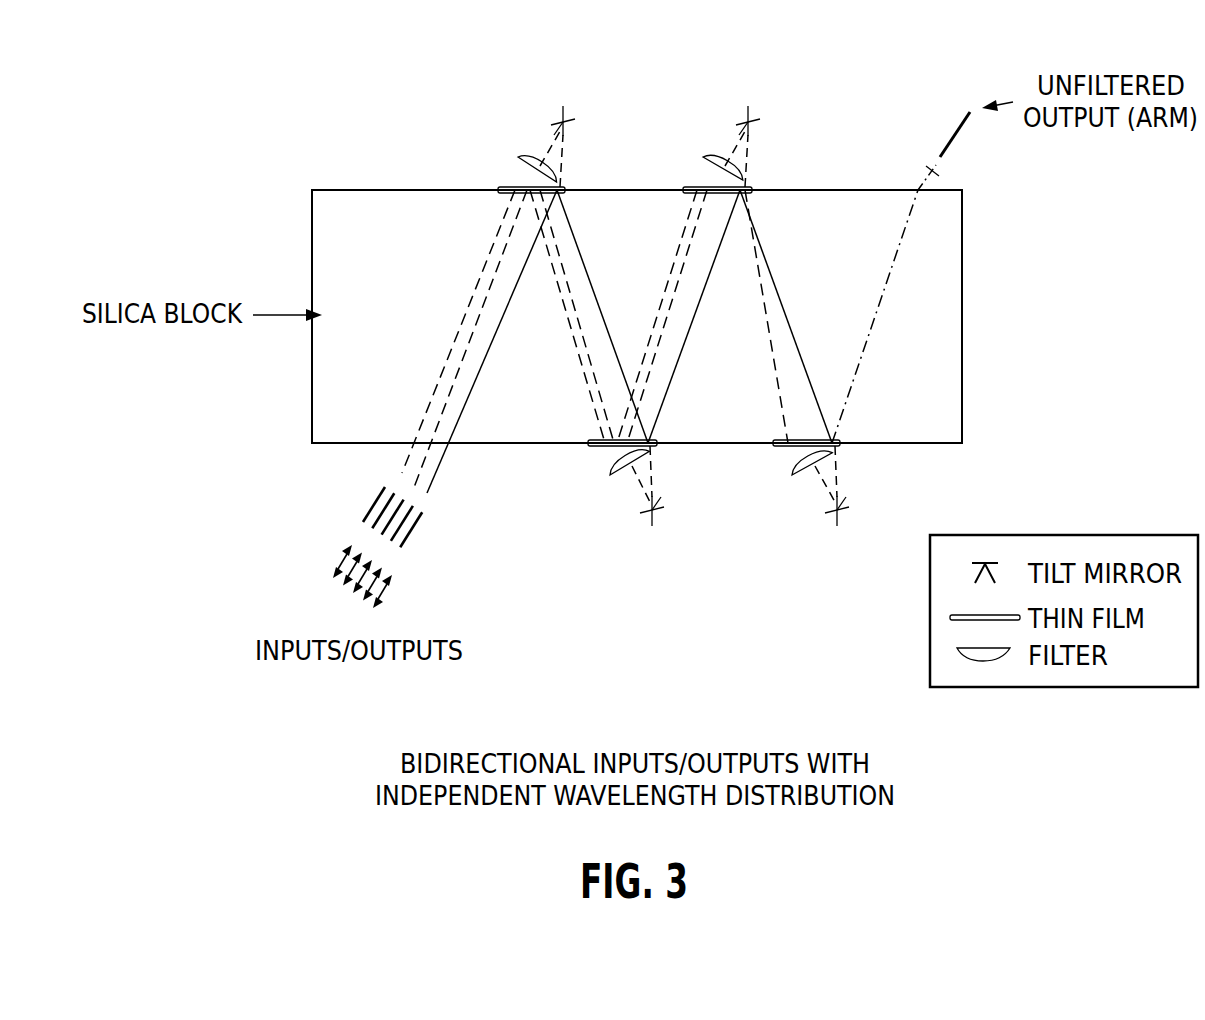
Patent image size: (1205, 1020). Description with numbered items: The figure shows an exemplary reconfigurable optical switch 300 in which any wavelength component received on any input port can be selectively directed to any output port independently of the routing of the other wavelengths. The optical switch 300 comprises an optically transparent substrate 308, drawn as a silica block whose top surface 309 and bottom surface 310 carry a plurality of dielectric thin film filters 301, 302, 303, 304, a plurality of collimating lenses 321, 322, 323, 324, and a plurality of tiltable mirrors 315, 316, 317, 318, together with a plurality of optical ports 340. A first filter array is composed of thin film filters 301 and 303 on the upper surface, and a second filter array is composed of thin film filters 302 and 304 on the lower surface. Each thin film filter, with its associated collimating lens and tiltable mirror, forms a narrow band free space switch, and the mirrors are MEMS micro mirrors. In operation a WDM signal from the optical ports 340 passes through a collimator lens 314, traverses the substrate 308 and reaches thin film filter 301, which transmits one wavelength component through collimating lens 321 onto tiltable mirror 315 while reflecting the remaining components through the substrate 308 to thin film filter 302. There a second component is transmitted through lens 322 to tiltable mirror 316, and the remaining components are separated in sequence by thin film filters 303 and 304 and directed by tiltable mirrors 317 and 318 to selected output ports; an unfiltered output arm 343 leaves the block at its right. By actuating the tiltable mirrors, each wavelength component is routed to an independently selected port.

The optical switch 300 is at (207, 77).
The thin film filter 301 is at (503, 186).
The thin film filter 302 is at (592, 448).
The thin film filter 303 is at (690, 186).
The thin film filter 304 is at (778, 448).
The optically transparent substrate 308 is at (320, 377).
The top surface of silica block 309 is at (368, 189).
The bottom surface of silica block 310 is at (493, 444).
The collimator lens 314 is at (455, 523).
The tiltable mirror 315 is at (568, 125).
The tiltable mirror 316 is at (660, 512).
The tiltable mirror 317 is at (752, 125).
The tiltable mirror 318 is at (845, 512).
The collimating lens 321 is at (522, 155).
The collimating lens 322 is at (612, 478).
The collimating lens 323 is at (708, 155).
The collimating lens 324 is at (795, 478).
The optical input/output port 340 is at (372, 512).
The unfiltered output arm 343 is at (952, 142).